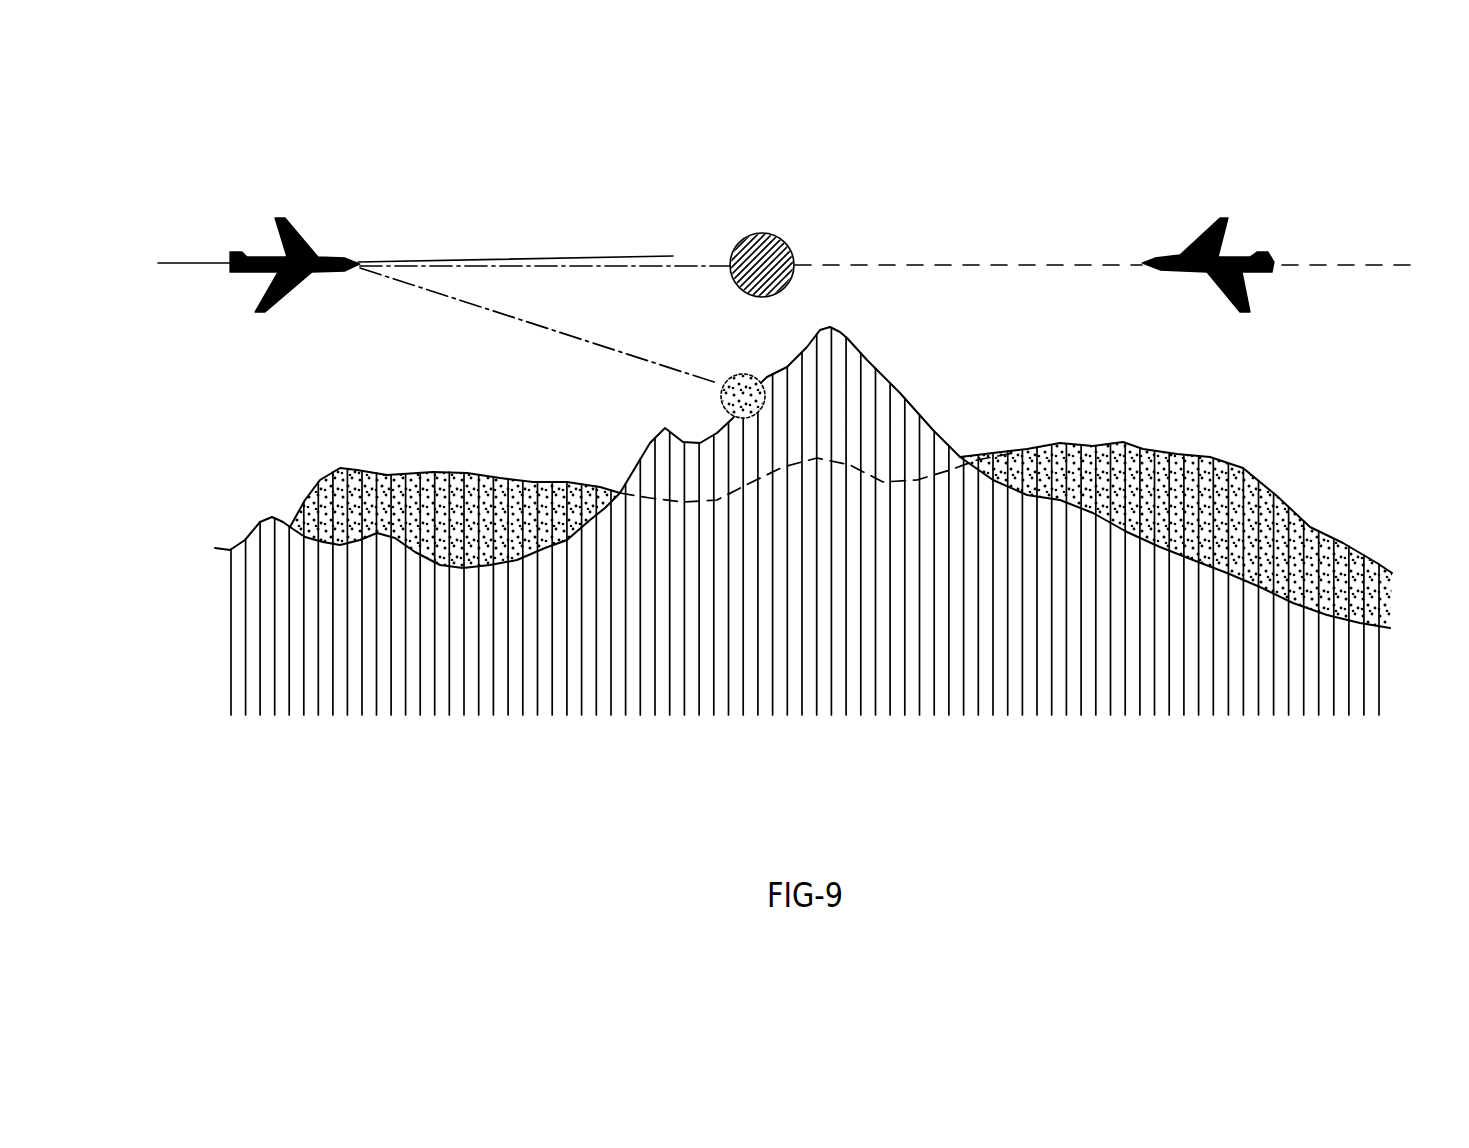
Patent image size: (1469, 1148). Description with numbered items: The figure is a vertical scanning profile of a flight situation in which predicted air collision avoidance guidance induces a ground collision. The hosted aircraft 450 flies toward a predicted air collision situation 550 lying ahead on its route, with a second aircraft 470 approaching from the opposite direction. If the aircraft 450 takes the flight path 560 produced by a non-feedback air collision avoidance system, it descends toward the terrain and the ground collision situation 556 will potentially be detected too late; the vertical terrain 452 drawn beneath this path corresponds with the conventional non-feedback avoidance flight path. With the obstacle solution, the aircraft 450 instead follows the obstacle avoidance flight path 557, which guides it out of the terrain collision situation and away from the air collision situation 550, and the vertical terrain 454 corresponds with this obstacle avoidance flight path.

The aircraft 450 is at (287, 245).
The aircraft #2 470 is at (1323, 177).
The air collision situation 550 is at (764, 215).
The ground collision situation 556 is at (722, 396).
The obstacle avoidance flight path 557 is at (550, 227).
The flight path 560 is at (437, 293).
The vertical terrain corresponded with non-feedback avoidance flight path 452 is at (1127, 532).
The vertical terrain corresponded with obstacle avoidance flight path 454 is at (1255, 390).